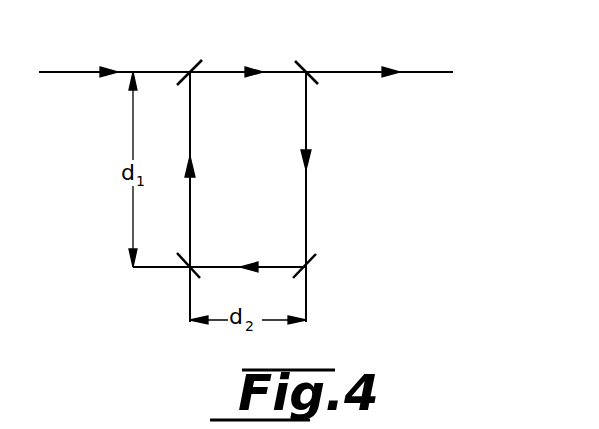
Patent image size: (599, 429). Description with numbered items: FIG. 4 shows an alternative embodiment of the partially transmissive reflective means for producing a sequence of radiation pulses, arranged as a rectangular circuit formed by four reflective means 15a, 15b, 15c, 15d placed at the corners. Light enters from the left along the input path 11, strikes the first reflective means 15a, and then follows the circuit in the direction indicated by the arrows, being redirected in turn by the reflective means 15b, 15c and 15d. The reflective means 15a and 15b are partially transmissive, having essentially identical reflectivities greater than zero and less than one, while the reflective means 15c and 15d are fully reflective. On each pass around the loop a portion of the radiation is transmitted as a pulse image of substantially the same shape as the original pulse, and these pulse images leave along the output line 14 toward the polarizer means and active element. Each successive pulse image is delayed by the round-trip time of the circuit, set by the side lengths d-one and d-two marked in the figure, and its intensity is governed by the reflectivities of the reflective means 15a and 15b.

The input light beam 11 is at (66, 71).
The line 14 is at (443, 74).
The reflective means 15a is at (193, 62).
The reflective means 15b is at (308, 63).
The reflective means 15c is at (308, 262).
The reflective means 15d is at (182, 262).